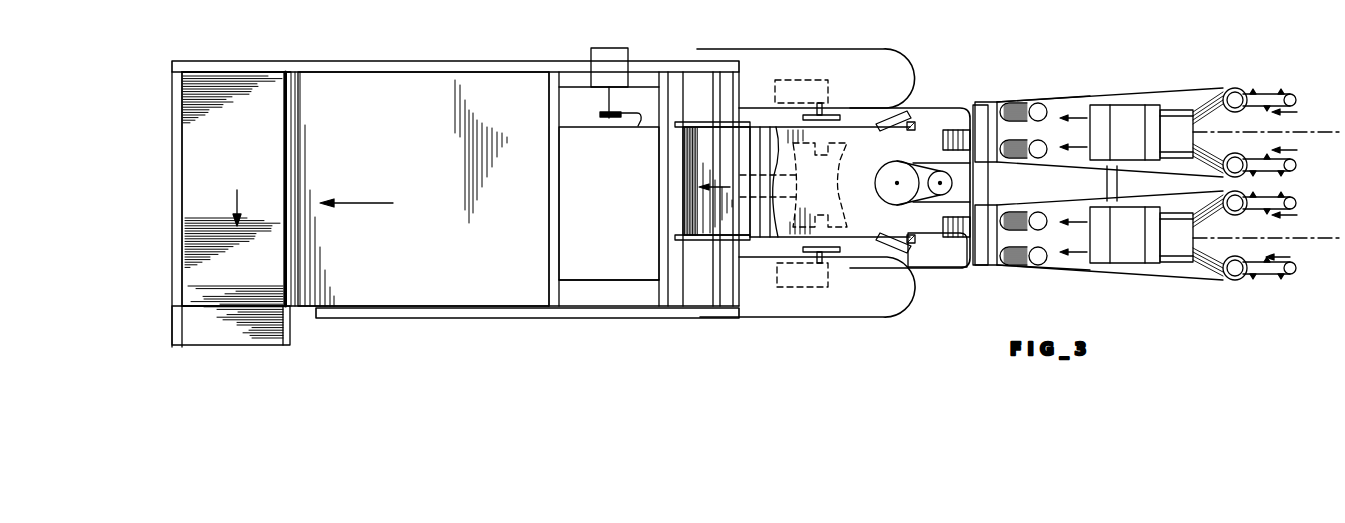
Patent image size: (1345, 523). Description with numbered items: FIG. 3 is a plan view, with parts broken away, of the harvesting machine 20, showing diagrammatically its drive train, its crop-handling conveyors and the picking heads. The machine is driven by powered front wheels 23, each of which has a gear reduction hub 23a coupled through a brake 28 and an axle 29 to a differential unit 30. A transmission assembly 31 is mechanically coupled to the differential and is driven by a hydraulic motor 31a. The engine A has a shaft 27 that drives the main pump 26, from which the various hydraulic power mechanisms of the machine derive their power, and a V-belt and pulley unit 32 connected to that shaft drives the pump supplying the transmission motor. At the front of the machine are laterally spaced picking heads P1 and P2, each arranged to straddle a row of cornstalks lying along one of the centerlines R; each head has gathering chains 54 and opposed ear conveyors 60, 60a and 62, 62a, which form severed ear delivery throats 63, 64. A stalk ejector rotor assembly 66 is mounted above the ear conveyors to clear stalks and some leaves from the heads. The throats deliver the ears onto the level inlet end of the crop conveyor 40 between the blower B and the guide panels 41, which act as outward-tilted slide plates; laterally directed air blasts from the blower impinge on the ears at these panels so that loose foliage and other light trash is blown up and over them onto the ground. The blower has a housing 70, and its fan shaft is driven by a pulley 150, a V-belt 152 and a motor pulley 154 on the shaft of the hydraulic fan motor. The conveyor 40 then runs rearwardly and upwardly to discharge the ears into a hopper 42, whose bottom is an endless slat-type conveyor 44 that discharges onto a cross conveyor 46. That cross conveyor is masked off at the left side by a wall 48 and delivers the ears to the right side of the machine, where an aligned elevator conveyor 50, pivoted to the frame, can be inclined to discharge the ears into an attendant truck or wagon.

The harvesting machine 20 is at (405, 54).
The powered front wheels 23 is at (734, 50).
The gear reduction hub 23a is at (805, 80).
The main pump 26 is at (591, 57).
The shaft 27 is at (604, 118).
The brake 28 is at (838, 114).
The axle 29 is at (806, 142).
The differential unit 30 is at (840, 176).
The transmission assembly 31 is at (787, 213).
The hydraulic motor 31a is at (742, 173).
The V-belt and pulley unit 32 is at (638, 124).
The crop conveyor 40 is at (692, 217).
The guide panels 41 is at (911, 112).
The hopper 42 is at (360, 308).
The slat-type conveyor 44 is at (425, 189).
The cross conveyor 46 is at (234, 189).
The wall 48 is at (205, 72).
The elevator conveyor 50 is at (190, 330).
The gathering chains 54 is at (1260, 92).
The ear conveyor 60 is at (1068, 271).
The ear conveyor 60a is at (1100, 204).
The ear conveyor 62 is at (1185, 175).
The ear conveyor 62a is at (1173, 93).
The severed ear delivery throat 63 is at (1020, 237).
The severed ear delivery throat 64 is at (1018, 133).
The stalk ejector rotor assembly 66 is at (1182, 104).
The housing 70 is at (931, 220).
The pulley 150 is at (950, 180).
The V-belt 152 is at (927, 158).
The motor pulley 154 is at (885, 184).
The engine A is at (613, 189).
The blower B is at (946, 124).
The picking head P1 is at (1188, 281).
The picking head P2 is at (1110, 88).
The centerlines R is at (1302, 132).